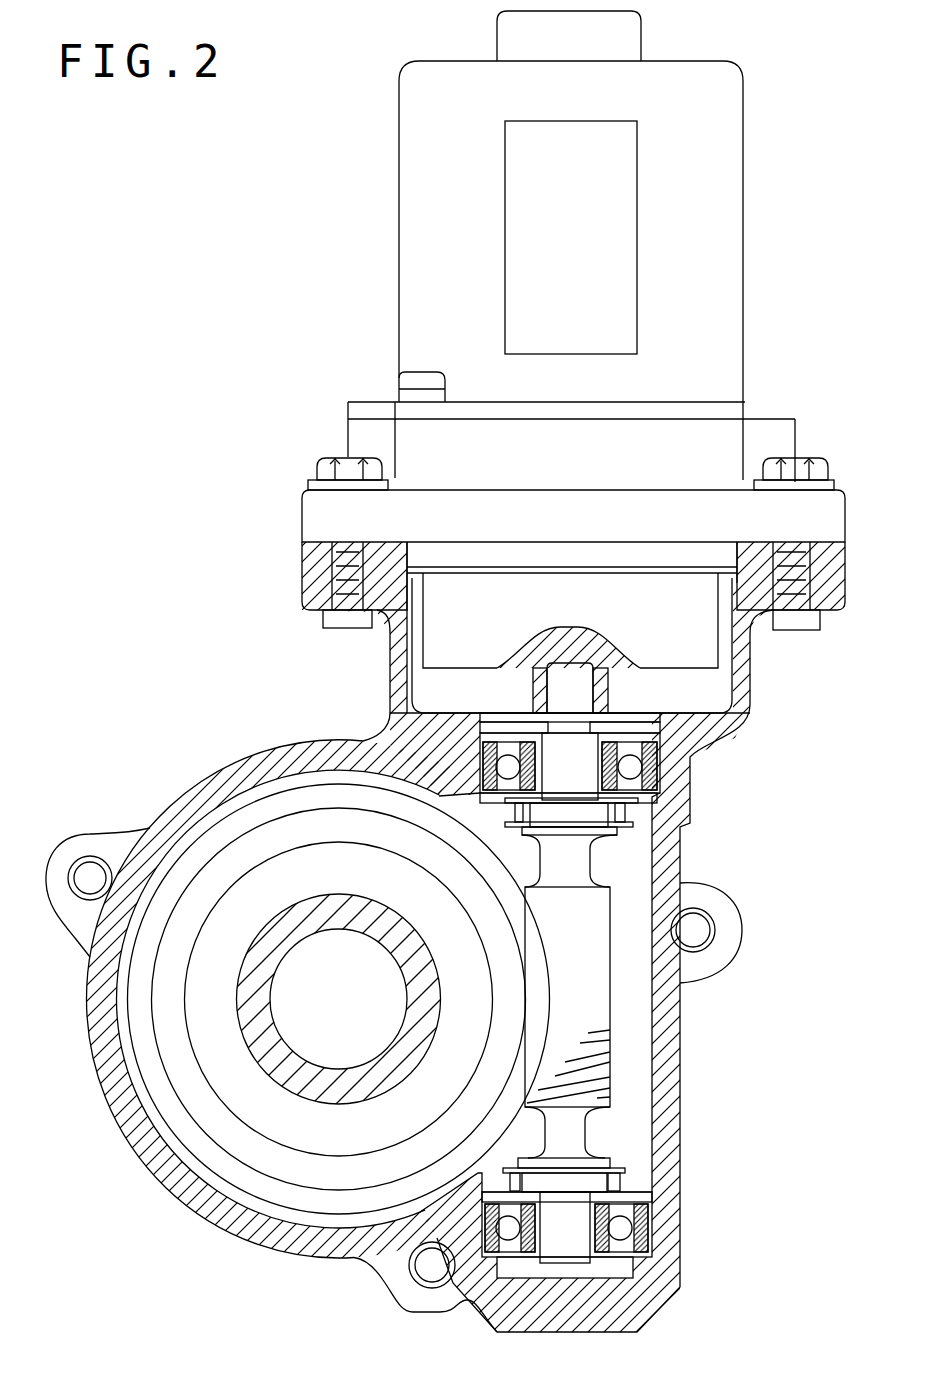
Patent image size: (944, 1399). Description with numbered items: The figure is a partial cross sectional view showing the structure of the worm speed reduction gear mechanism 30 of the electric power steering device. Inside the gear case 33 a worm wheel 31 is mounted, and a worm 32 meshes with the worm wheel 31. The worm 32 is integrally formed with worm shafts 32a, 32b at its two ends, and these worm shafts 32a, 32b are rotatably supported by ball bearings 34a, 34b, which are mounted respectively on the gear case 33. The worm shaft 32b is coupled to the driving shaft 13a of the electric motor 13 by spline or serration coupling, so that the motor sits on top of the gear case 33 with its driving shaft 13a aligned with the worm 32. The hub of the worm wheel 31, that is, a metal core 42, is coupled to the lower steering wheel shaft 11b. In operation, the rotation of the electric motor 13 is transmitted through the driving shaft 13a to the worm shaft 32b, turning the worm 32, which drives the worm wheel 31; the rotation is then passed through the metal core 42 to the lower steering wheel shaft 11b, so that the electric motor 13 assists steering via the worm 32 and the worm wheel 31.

The electric motor 13 is at (726, 261).
The driving shaft 13a is at (605, 690).
The worm speed reduction gear mechanism 30 is at (229, 600).
The worm wheel 31 is at (223, 865).
The worm 32 is at (600, 1097).
The worm shaft 32a is at (575, 1140).
The worm shaft 32b is at (570, 872).
The gear case 33 is at (262, 765).
The ball bearing 34a is at (622, 1235).
The ball bearing 34b is at (630, 768).
The metal core 42 is at (343, 1097).
The lower steering wheel shaft 11b is at (300, 1033).